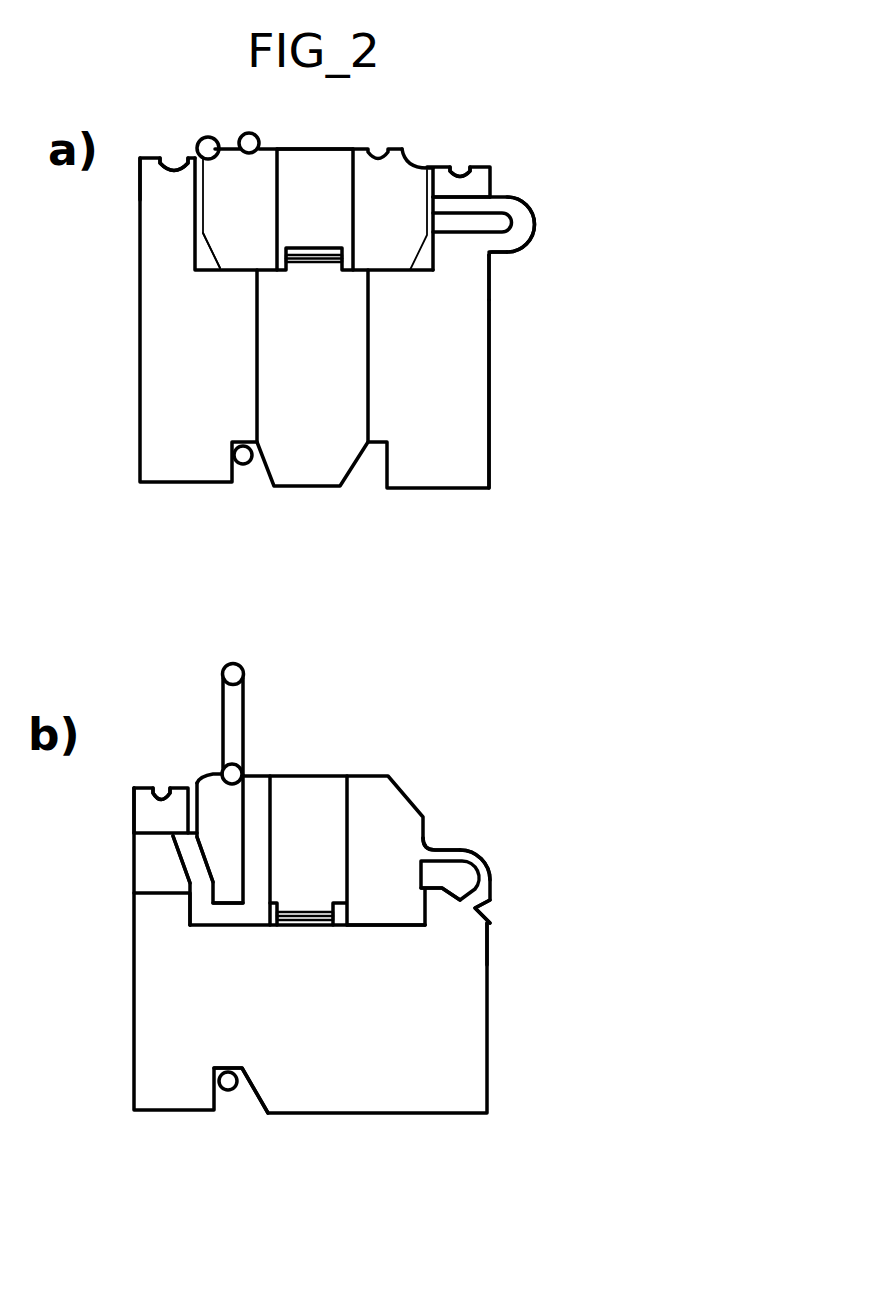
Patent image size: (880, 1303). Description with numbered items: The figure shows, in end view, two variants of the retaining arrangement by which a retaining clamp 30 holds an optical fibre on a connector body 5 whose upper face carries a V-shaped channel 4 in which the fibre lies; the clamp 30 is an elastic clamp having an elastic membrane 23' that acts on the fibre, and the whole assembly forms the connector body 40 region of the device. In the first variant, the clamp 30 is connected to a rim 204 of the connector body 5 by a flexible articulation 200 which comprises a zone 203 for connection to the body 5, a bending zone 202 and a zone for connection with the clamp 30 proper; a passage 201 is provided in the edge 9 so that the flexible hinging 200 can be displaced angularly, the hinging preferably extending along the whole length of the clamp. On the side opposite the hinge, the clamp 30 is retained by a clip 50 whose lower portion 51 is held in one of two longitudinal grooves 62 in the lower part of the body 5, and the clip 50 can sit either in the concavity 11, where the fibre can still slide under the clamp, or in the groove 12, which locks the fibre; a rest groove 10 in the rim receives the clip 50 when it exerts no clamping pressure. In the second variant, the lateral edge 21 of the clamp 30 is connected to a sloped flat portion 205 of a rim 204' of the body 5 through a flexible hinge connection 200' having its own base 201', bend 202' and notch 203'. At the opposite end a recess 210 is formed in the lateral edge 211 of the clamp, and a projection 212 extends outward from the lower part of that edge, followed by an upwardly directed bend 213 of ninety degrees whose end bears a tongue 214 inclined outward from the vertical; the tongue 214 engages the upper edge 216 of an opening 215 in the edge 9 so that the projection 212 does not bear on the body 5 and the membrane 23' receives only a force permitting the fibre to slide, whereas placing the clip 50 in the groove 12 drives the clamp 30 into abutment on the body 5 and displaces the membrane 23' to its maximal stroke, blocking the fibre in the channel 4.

In FIG. 2a, the V-shaped channel 4 is at (306, 266).
In FIG. 2b, the V-shaped channel 4 is at (316, 923).
In FIG. 2a, the connector body 5 is at (481, 346).
In FIG. 2b, the connector body 5 is at (458, 1013).
In FIG. 2a, the edge 9 is at (142, 188).
In FIG. 2b, the edge 9 is at (135, 808).
In FIG. 2a, the groove 10 is at (172, 161).
In FIG. 2b, the groove 10 is at (160, 790).
In FIG. 2a, the groove 11 is at (205, 160).
In FIG. 2a, the groove 12 is at (249, 156).
In FIG. 2b, the groove 12 is at (245, 771).
In FIG. 2a, the lateral edge 21 is at (246, 263).
In FIG. 2b, the lateral edge 21 is at (381, 915).
In FIG. 2a, the elastic membrane 23' is at (319, 283).
In FIG. 2b, the elastic membrane 23' is at (299, 935).
In FIG. 2a, the retaining clamp 30 is at (326, 148).
In FIG. 2b, the retaining clamp 30 is at (331, 772).
In FIG. 2a, the housing body 40 is at (163, 296).
In FIG. 2a, the clip 50 is at (208, 135).
In FIG. 2b, the clip 50 is at (252, 703).
In FIG. 2a, the lower portion 51 is at (233, 456).
In FIG. 2b, the lower portion 51 is at (222, 1070).
In FIG. 2a, the longitudinal groove 62 is at (259, 472).
In FIG. 2b, the longitudinal groove 62 is at (238, 1100).
In FIG. 2a, the flexible articulation 200 is at (507, 219).
In FIG. 2a, the passage 201 is at (485, 171).
In FIG. 2a, the bending zone 202 is at (544, 224).
In FIG. 2a, the connection zone 203 is at (524, 269).
In FIG. 2a, the rim 204 is at (524, 282).
In FIG. 2b, the flexible hinge connection 200' is at (470, 852).
In FIG. 2b, the tongue base (deflected) 201' is at (445, 827).
In FIG. 2b, the tongue bend (deflected) 202' is at (503, 851).
In FIG. 2b, the notch (deflected) 203' is at (513, 909).
In FIG. 2b, the rim 204' is at (517, 944).
In FIG. 2b, the sloped flat portion 205 is at (443, 893).
In FIG. 2b, the recess 210 is at (211, 795).
In FIG. 2b, the lateral edge 211 is at (270, 813).
In FIG. 2b, the projection 212 is at (226, 915).
In FIG. 2b, the bend 213 is at (190, 912).
In FIG. 2b, the tongue 214 is at (188, 852).
In FIG. 2b, the opening 215 is at (140, 853).
In FIG. 2b, the upper edge 216 is at (140, 832).